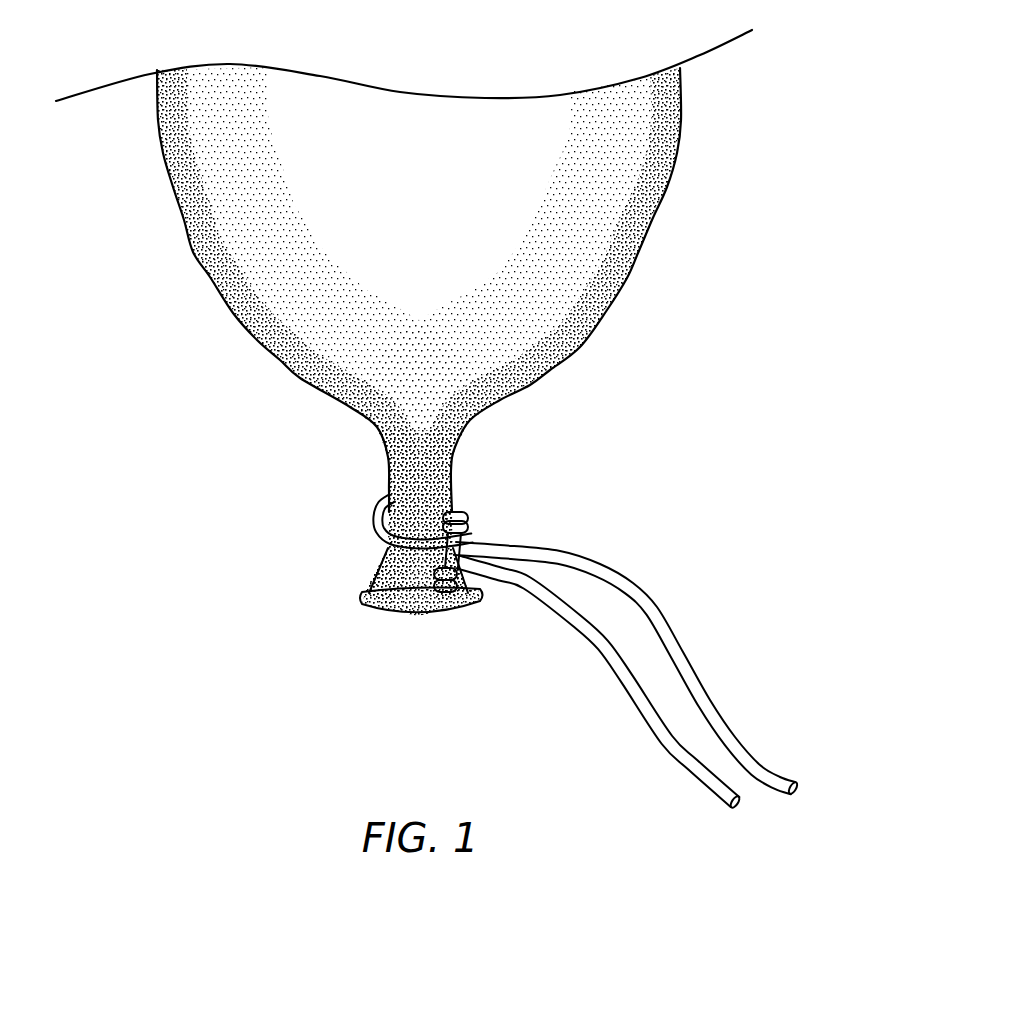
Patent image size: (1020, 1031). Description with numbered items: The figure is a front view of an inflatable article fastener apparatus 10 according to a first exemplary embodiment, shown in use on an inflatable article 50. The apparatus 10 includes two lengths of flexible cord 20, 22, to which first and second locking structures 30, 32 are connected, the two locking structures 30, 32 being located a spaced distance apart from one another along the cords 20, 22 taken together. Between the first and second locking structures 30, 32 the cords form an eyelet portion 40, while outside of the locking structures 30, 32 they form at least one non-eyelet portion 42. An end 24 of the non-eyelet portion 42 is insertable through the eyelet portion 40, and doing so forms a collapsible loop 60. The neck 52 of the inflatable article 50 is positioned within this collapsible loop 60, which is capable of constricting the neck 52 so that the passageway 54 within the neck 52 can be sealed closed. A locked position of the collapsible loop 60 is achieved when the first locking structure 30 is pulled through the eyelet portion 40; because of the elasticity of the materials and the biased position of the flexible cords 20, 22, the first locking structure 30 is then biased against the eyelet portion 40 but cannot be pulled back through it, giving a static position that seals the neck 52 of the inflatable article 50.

The inflatable article fastener apparatus 10 is at (622, 416).
The flexible cord 20 is at (540, 543).
The flexible cord 22 is at (577, 630).
The end 24 is at (744, 804).
The first locking structure 30 is at (468, 518).
The second locking structure 32 is at (442, 613).
The eyelet portion 40 is at (428, 566).
The non-eyelet portion 42 is at (375, 528).
The inflatable article 50 is at (280, 303).
The neck 52 is at (235, 427).
The passageway 54 is at (395, 622).
The collapsible loop 60 is at (421, 514).